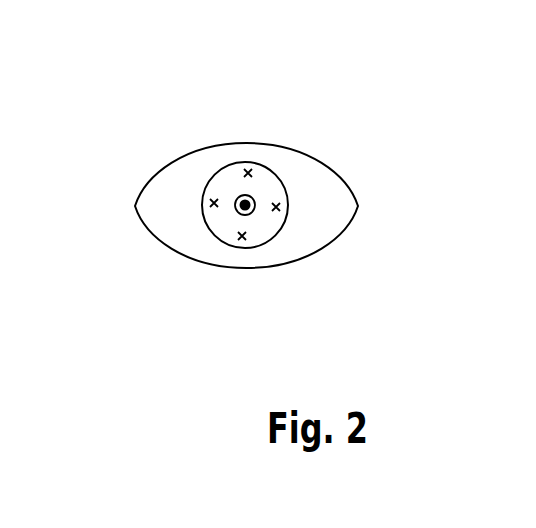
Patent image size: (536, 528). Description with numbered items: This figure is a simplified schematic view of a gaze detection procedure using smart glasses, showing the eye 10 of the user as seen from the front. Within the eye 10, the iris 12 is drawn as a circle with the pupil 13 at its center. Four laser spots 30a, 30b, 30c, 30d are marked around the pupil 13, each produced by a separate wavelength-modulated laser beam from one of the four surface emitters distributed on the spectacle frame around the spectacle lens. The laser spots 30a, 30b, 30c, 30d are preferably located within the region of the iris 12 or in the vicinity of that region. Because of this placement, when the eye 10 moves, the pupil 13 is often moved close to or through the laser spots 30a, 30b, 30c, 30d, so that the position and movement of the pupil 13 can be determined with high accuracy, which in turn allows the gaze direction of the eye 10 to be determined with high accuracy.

The eye 10 is at (138, 125).
The iris 12 is at (283, 233).
The pupil 13 is at (236, 202).
The laser spot 30a is at (214, 205).
The laser spot 30b is at (242, 238).
The laser spot 30c is at (249, 172).
The laser spot 30d is at (276, 206).